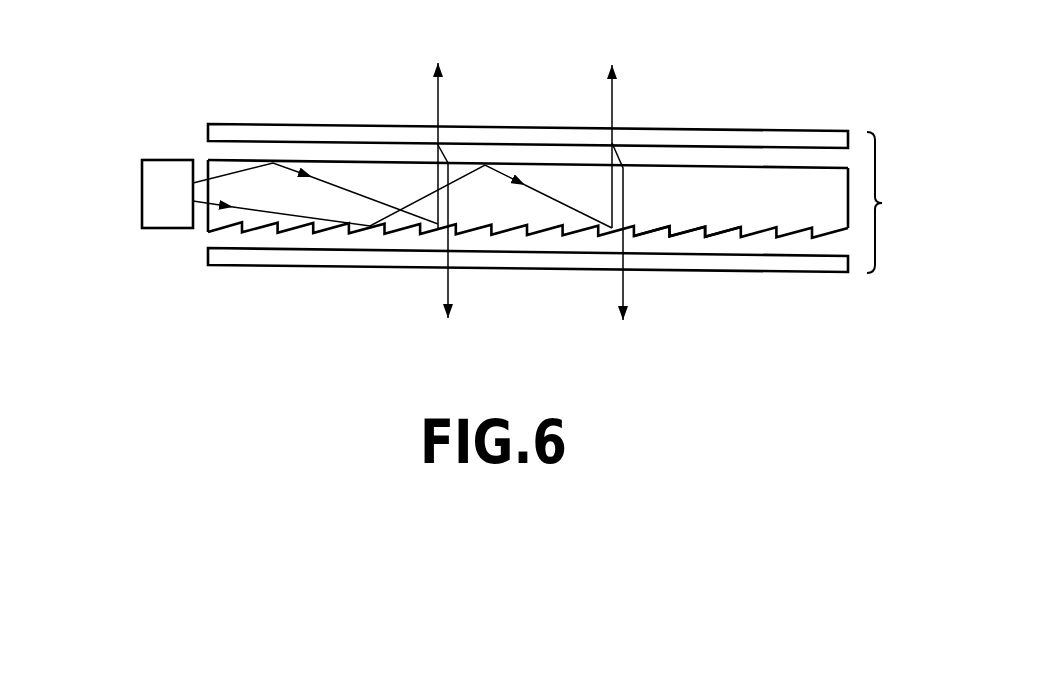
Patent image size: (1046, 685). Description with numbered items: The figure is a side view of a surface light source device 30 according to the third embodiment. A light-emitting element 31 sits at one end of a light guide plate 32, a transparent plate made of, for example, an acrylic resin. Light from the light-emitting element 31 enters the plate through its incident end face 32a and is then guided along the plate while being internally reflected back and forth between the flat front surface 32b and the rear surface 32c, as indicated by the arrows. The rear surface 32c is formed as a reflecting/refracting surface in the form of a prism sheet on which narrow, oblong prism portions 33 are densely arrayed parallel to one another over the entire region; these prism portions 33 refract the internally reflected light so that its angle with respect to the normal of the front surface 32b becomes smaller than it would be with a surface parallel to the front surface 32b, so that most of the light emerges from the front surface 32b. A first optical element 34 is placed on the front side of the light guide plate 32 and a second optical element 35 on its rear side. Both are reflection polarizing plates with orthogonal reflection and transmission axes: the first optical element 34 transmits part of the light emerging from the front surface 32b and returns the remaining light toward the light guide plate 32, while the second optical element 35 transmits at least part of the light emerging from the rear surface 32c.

The surface light source device 30 is at (501, 196).
The light-emitting element 31 is at (158, 191).
The light guide plate 32 is at (475, 192).
The incident end face 32a is at (207, 222).
The front surface 32b is at (668, 157).
The rear surface 32c is at (758, 240).
The prism portions 33 is at (714, 238).
The first optical element 34 is at (303, 135).
The second optical element 35 is at (307, 257).